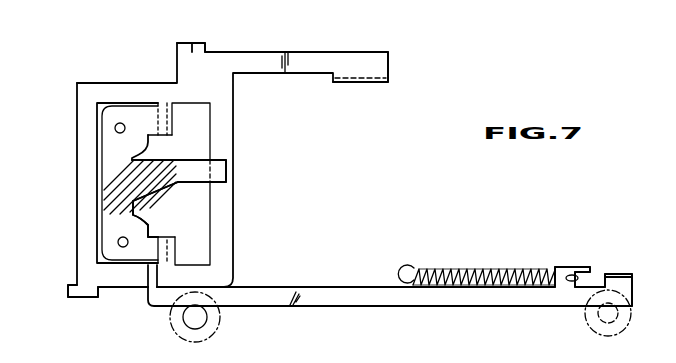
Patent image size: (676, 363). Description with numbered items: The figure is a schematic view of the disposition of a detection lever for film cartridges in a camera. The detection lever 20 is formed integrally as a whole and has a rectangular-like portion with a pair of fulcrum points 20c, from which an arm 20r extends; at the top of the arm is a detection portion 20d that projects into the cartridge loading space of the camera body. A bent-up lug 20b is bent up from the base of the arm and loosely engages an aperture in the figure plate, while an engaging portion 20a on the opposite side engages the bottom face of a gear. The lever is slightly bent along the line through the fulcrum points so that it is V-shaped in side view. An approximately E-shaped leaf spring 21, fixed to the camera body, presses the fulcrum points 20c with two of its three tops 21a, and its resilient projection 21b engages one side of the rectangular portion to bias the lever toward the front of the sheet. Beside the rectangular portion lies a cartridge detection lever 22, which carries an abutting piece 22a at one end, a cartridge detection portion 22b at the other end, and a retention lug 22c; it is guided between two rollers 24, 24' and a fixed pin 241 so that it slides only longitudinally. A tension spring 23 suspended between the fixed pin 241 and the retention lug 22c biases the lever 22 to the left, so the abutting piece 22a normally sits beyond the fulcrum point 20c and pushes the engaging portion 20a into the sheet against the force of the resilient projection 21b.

The detection lever 20 is at (348, 49).
The engaging portion 20a is at (68, 290).
The bent-up lug 20b is at (201, 44).
The fulcrum points 20c is at (164, 136).
The detection portion 20d is at (364, 83).
The arm 20r is at (287, 53).
The leaf spring 21 is at (108, 150).
The tops 21a is at (163, 236).
The resilient projection 21b is at (224, 173).
The cartridge detection lever 22 is at (338, 307).
The abutting piece 22a is at (153, 289).
The cartridge detection portion 22b is at (626, 274).
The retention lug 22c is at (560, 267).
The tension spring 23 is at (488, 268).
The fixed pin 241 is at (433, 247).
The roller 24 is at (590, 316).
The roller 24' is at (213, 321).